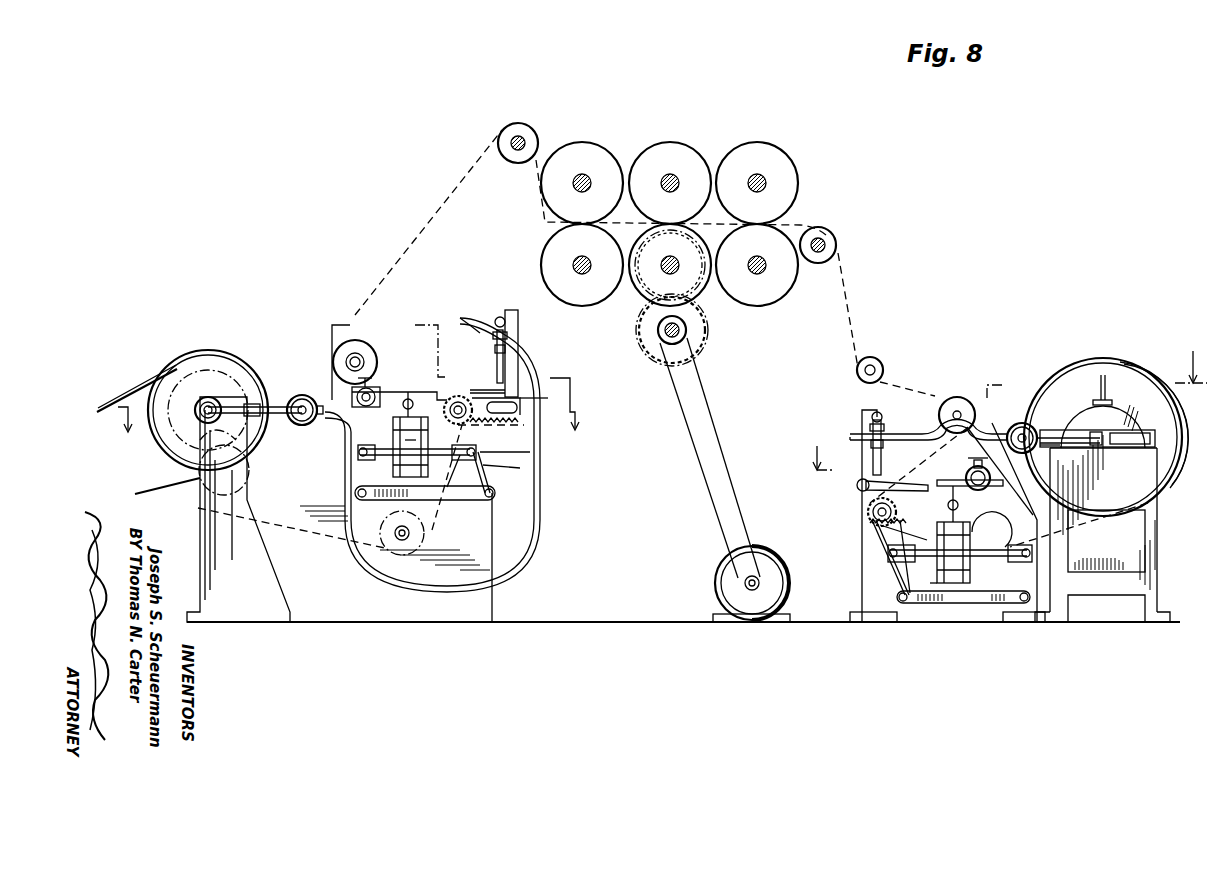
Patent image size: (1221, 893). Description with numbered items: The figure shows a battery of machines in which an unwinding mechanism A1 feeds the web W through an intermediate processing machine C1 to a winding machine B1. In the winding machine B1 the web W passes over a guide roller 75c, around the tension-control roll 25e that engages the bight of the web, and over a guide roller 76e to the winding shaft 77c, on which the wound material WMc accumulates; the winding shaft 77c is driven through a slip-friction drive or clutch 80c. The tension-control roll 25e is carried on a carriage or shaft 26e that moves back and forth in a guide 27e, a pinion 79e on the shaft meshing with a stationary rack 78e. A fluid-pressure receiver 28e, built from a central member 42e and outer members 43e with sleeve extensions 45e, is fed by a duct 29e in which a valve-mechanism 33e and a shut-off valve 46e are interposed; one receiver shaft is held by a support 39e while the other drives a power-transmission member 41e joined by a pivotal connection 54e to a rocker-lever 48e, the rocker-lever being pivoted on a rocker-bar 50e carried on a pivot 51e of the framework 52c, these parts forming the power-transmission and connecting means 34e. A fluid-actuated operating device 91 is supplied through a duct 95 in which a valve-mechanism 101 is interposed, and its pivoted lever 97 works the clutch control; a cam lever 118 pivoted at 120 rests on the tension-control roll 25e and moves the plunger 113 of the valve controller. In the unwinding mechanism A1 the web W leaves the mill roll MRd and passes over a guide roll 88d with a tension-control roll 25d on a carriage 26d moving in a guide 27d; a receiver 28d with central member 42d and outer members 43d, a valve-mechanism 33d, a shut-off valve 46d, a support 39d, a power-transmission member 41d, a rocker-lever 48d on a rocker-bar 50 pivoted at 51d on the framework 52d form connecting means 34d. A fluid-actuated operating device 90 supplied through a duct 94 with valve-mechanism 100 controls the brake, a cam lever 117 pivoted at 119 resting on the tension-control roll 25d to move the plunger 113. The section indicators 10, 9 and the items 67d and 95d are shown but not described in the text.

The intermediate processing machine C1 is at (667, 350).
The winding machine B1 is at (217, 233).
The unwinding mechanism A1 is at (1039, 222).
The web W is at (455, 190).
The slip-friction drive or clutch 80c is at (208, 385).
The winding shaft 77c is at (245, 480).
The wound material WMc is at (197, 498).
The section line 10 is at (359, 414).
The fluid-actuated operating device 91 is at (300, 392).
The pivoted lever 97 is at (294, 422).
The duct 29e is at (328, 420).
The guide roller 75c is at (355, 340).
The duct 95 is at (545, 528).
The valve-mechanism 101 is at (495, 372).
The plunger 113 is at (500, 392).
The tension-control roll 25e is at (505, 392).
The cam lever 118 is at (478, 393).
The pivot 120 is at (550, 392).
The guide 27e is at (518, 406).
The stationary rack 78e is at (530, 428).
The valve-mechanism 33e is at (382, 382).
The shut-off valve 46e is at (378, 402).
The pinion 79e is at (413, 404).
The support 39e is at (366, 445).
The outer member 43e is at (393, 465).
The carriage or shaft 26e is at (462, 395).
The pivotal connection 54e is at (530, 455).
The power-transmission member 41e is at (520, 468).
The power-transmission and connecting means 34e is at (520, 484).
The rocker-lever 48e is at (500, 497).
The pivot 51e is at (356, 493).
The fluid-pressure receiver 28e is at (392, 526).
The sleeve extension 45e is at (455, 455).
The central member 42e is at (444, 497).
The rocker-bar 50e is at (460, 503).
The guide roller 76e is at (375, 565).
The framework 52c is at (478, 612).
The duct 94 is at (910, 425).
The guide roll 88d is at (957, 395).
The fluid-actuated operating device 90 is at (1020, 423).
The framework 52d is at (880, 612).
The valve-mechanism 100 is at (870, 453).
The section line 9 is at (1004, 410).
The pivot 119 is at (856, 486).
The cam lever 117 is at (870, 490).
The tension-control roll 25d is at (868, 515).
The carriage 26d is at (880, 530).
The guide 27d is at (895, 530).
The pivot 51d is at (905, 543).
The power-transmission and connecting means 34d is at (895, 560).
The rocker-lever 48d is at (880, 580).
The valve-mechanism 33d is at (988, 478).
The shut-off valve 46d is at (958, 506).
The slot 67d is at (1002, 529).
The outer member 43d is at (970, 570).
The power-transmission member 41d is at (905, 560).
The central member 42d is at (960, 588).
The fluid-pressure receiver 28d is at (952, 610).
The rocker-bar 50 is at (985, 610).
The support 39d is at (1040, 472).
The mill roll MRd is at (1130, 366).
The roll stand 95d is at (1115, 418).